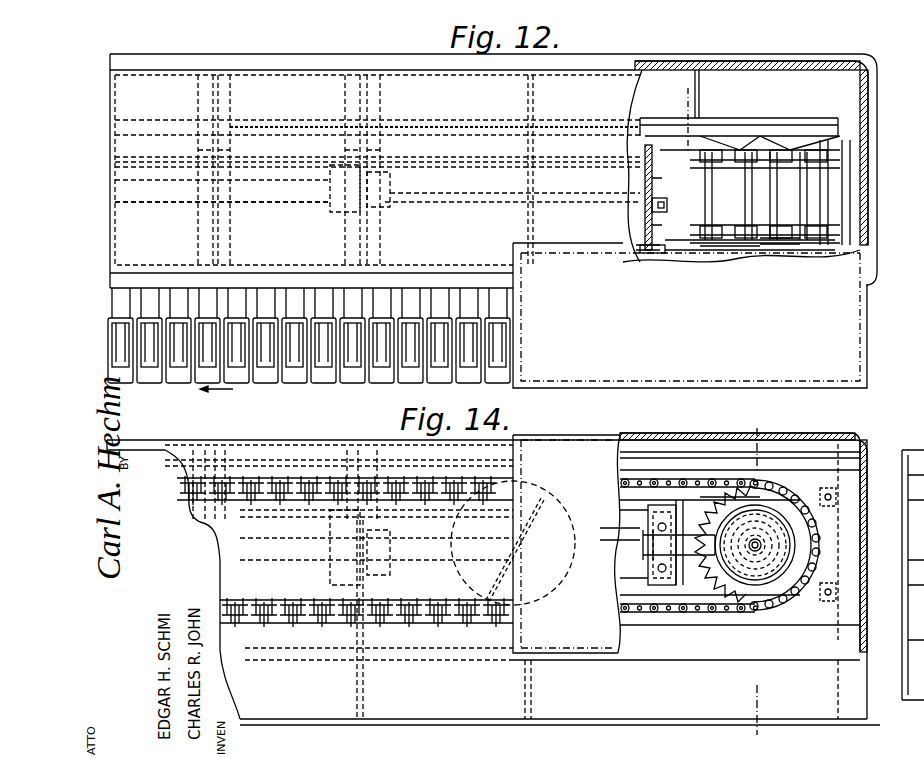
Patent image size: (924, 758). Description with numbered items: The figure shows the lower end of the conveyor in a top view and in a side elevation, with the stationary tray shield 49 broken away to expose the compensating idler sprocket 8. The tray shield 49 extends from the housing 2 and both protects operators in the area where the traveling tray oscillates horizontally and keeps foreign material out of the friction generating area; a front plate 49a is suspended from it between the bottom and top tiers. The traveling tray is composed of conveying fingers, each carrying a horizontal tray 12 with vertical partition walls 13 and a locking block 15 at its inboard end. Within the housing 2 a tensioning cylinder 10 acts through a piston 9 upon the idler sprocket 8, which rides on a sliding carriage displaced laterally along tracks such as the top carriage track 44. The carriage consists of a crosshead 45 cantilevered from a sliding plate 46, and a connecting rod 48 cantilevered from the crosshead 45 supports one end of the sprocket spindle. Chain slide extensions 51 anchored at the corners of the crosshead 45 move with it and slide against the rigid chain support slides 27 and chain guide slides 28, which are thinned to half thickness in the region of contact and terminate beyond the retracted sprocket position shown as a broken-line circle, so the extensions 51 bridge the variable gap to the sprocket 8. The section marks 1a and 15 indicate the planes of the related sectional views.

In FIG. 12, the housing 2 is at (370, 70).
In FIG. 14, the housing 2 is at (334, 450).
In FIG. 12, the idler sprocket 8 is at (770, 235).
In FIG. 14, the idler sprocket 8 is at (738, 497).
In FIG. 12, the piston 9 is at (432, 190).
In FIG. 14, the piston 9 is at (408, 555).
In FIG. 12, the tensioning cylinder 10 is at (270, 190).
In FIG. 14, the tensioning cylinder 10 is at (260, 555).
In FIG. 12, the horizontal tray 12 is at (330, 375).
In FIG. 12, the vertical partition walls 13 is at (655, 103).
In FIG. 14, the vertical partition walls 13 is at (290, 478).
In FIG. 14, the locking block 15 is at (718, 418).
In FIG. 14, the chain support slides 27 is at (740, 626).
In FIG. 12, the chain guide slides 28 is at (632, 248).
In FIG. 14, the chain guide slides 28 is at (662, 462).
In FIG. 12, the top carriage track 44 is at (465, 130).
In FIG. 12, the crosshead 45 is at (645, 250).
In FIG. 14, the crosshead 45 is at (650, 570).
In FIG. 12, the sliding plate 46 is at (768, 150).
In FIG. 12, the connecting rod 48 is at (725, 256).
In FIG. 14, the connecting rod 48 is at (712, 552).
In FIG. 12, the stationary tray shield 49 is at (855, 362).
In FIG. 14, the stationary tray shield 49 is at (608, 450).
In FIG. 14, the front plate 49a is at (908, 580).
In FIG. 14, the chain slide extension 51 is at (640, 500).
In FIG. 12, the section line 1a is at (633, 274).